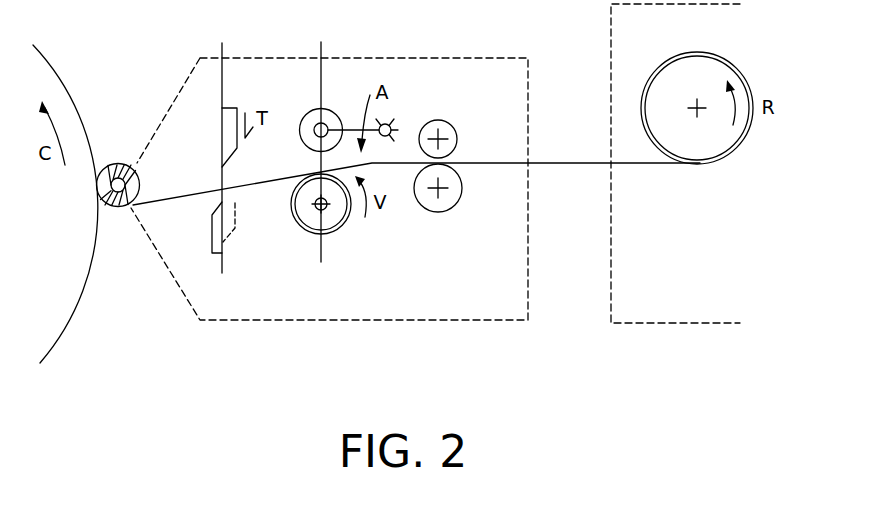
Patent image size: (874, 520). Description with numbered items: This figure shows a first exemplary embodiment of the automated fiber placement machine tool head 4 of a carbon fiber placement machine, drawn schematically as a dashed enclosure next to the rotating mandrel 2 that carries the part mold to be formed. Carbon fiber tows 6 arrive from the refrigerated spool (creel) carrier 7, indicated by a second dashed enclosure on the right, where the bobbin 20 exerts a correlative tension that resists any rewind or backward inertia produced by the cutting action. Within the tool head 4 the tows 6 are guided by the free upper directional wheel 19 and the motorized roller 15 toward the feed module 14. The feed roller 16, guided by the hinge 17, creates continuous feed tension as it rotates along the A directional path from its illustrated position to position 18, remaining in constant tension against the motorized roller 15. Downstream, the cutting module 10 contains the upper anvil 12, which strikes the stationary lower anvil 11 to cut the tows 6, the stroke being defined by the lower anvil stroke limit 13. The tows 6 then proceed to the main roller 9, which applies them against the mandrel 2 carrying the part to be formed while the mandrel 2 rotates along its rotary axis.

The mandrel 2 is at (68, 92).
The automated fiber placement machine tool head 4 is at (490, 320).
The carbon fiber tows 6 is at (568, 163).
The refrigerated spool (creel) carrier 7 is at (662, 323).
The main roller 9 is at (114, 164).
The cutting module 10 is at (221, 147).
The lower anvil 11 is at (212, 236).
The upper anvil 12 is at (222, 128).
The lower anvil stroke limit 13 is at (235, 212).
The feed module 14 is at (321, 141).
The motorized roller 15 is at (333, 222).
The feed roller 16 is at (337, 117).
The hinge 17 is at (386, 123).
The position 18 is at (310, 165).
The free upper directional wheel 19 is at (462, 188).
The bobbin 20 is at (723, 140).